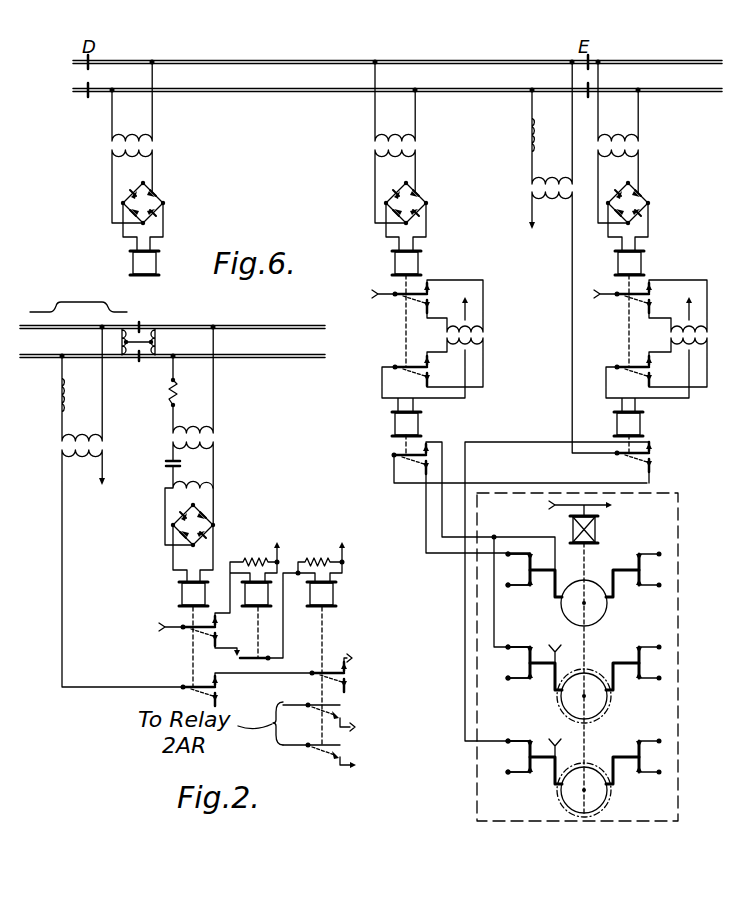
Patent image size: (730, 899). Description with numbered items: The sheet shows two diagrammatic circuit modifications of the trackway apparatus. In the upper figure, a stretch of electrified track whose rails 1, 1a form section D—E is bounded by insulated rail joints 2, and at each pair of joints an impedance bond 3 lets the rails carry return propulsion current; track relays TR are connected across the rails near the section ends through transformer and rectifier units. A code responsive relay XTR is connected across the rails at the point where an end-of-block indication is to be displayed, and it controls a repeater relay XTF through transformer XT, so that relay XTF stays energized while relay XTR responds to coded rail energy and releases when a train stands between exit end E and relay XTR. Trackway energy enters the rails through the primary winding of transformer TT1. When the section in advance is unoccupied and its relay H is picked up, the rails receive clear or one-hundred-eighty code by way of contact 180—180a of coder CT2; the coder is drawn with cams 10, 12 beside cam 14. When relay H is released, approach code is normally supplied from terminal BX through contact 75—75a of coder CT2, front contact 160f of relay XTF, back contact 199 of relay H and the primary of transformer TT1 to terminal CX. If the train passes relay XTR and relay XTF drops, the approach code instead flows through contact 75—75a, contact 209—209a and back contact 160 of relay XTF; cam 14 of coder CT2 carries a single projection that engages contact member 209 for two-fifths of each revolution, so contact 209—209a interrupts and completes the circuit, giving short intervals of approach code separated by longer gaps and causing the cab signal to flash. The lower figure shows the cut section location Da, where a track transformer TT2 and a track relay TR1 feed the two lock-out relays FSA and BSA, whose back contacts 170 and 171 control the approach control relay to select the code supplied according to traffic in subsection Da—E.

In FIG. 6, the track rail 1 is at (450, 63).
In FIG. 6, the track rail 1a is at (455, 93).
In FIG. 6, the insulated rail joints 2 is at (595, 82).
In FIG. 2, the impedance bond 3 is at (160, 340).
In FIG. 6, the polar code following relay unit 10 is at (598, 709).
In FIG. 6, the polar code following relay unit 12 is at (563, 800).
In FIG. 6, the cam 14 is at (601, 612).
In FIG. 6, the contact member of coder CT2 75 is at (532, 672).
In FIG. 6, the contact of coder CT2 75a is at (530, 653).
In FIG. 6, the back contact of relay XTF 160 is at (424, 473).
In FIG. 6, the front contact of relay XTF 160f is at (428, 449).
In FIG. 2, the back contact of relay BSA 170 is at (327, 719).
In FIG. 2, the back contact of relay BSA 171 is at (326, 759).
In FIG. 6, the 180 code contact of coder CT2 180 is at (532, 769).
In FIG. 6, the 180 code contact of coder CT2 180a is at (530, 748).
In FIG. 6, the back contact of relay H 199 is at (651, 467).
In FIG. 6, the contact member of coder CT2 209 is at (533, 580).
In FIG. 6, the contact of coder CT2 209a is at (543, 537).
In FIG. 6, the track relay TR is at (157, 265).
In FIG. 6, the code responsive relay XTR is at (395, 265).
In FIG. 6, the transformer TT1 is at (531, 187).
In FIG. 6, the transformer XT is at (486, 337).
In FIG. 6, the repeater relay XTF is at (395, 423).
In FIG. 6, the relay H is at (617, 423).
In FIG. 6, the coder CT2 is at (477, 655).
In FIG. 2, the cut section location Da is at (94, 314).
In FIG. 2, the track transformer TT2 is at (122, 506).
In FIG. 2, the track relay TR1 is at (182, 595).
In FIG. 2, the lock-out relay FSA is at (258, 607).
In FIG. 2, the lock-out relay BSA is at (335, 595).